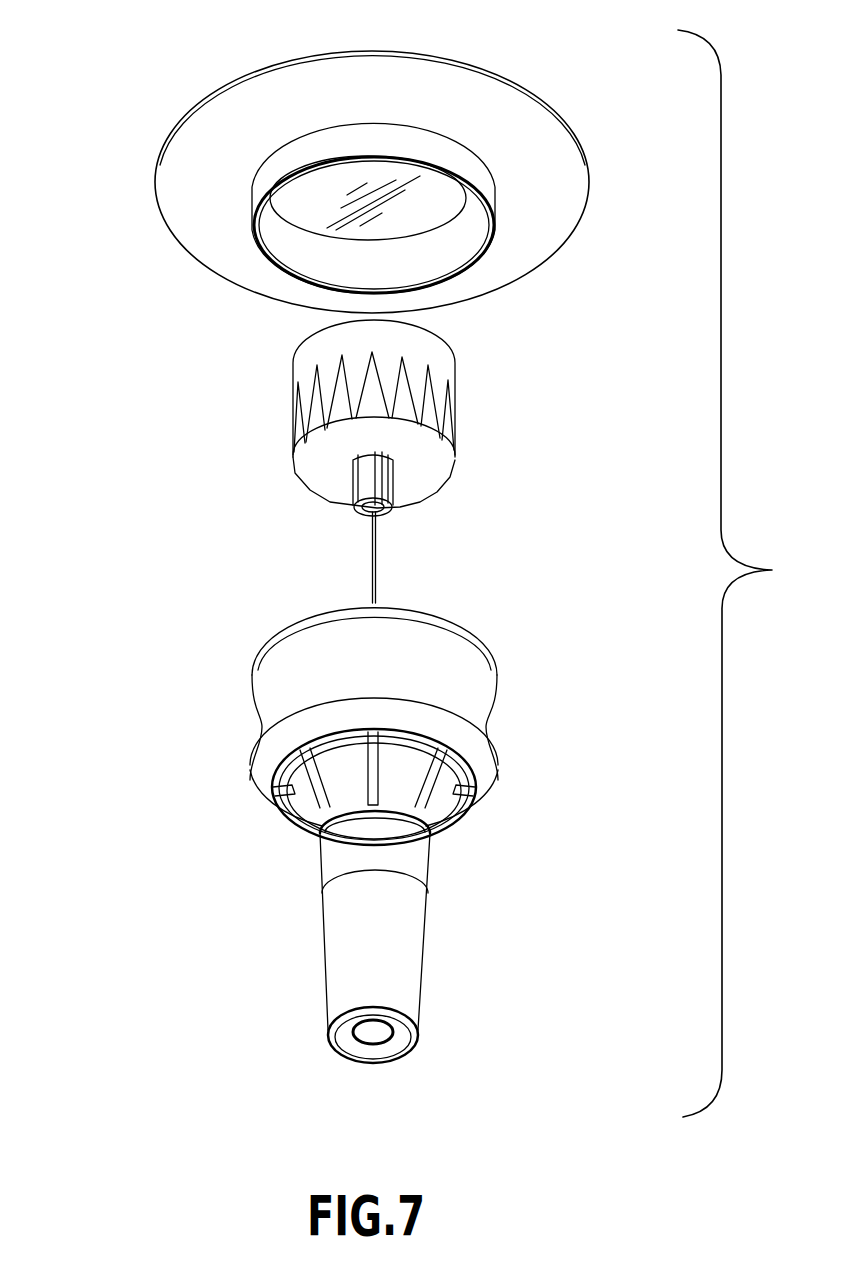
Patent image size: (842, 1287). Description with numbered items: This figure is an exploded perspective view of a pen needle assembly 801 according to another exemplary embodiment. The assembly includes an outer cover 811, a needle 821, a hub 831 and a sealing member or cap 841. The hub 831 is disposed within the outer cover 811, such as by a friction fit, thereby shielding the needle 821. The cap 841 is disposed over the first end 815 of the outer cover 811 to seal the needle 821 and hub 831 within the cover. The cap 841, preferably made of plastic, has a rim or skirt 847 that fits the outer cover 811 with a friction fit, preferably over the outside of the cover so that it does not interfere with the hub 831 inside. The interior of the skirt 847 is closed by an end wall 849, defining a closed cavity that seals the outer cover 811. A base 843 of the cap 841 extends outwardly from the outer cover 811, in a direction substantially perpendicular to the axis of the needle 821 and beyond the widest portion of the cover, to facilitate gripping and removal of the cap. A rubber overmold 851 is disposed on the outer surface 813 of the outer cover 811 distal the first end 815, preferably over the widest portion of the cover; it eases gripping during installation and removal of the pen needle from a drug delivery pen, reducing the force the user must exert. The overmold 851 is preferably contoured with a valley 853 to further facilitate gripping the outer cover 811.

The pen needle assembly 801 is at (240, 481).
The outer cover 811 is at (382, 947).
The outer surface 813 is at (427, 872).
The first end 815 is at (413, 1052).
The needle 821 is at (383, 557).
The hub 831 is at (462, 403).
The cap 841 is at (389, 167).
The base 843 is at (270, 62).
The skirt 847 is at (497, 243).
The end wall 849 is at (332, 203).
The rubber overmold 851 is at (362, 726).
The valley 853 is at (495, 710).